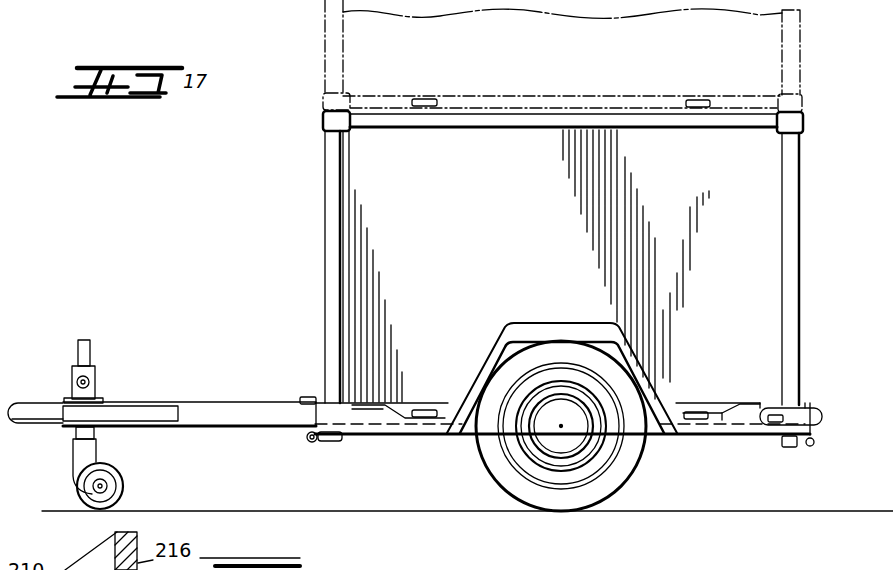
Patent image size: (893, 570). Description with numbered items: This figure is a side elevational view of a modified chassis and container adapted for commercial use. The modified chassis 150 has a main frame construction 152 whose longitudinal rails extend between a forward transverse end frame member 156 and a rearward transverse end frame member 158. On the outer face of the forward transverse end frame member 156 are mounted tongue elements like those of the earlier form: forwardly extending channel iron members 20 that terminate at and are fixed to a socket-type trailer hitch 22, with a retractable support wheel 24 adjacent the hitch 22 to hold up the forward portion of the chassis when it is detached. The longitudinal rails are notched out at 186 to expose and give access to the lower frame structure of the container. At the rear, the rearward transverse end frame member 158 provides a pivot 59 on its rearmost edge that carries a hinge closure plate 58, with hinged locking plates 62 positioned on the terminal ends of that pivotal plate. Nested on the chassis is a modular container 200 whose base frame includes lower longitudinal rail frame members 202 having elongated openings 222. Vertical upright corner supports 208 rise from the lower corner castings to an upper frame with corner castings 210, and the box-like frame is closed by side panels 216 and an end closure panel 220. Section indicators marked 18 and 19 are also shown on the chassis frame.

The channel iron members 20 is at (230, 417).
The trailer hitch 22 is at (28, 402).
The retractable support wheel 24 is at (92, 357).
The hinge closure plate 58 is at (812, 410).
The pivot 59 is at (816, 442).
The hinged locking plates 62 is at (808, 402).
The modified chassis 150 is at (253, 384).
The main frame construction 152 is at (398, 441).
The forward transverse end frame member 156 is at (306, 396).
The rearward transverse end frame member 158 is at (800, 446).
The notch 186 is at (410, 400).
The modular container 200 is at (320, 66).
The lower longitudinal rail frame members 202 is at (737, 414).
The vertical upright corner supports 208 is at (330, 248).
The upper frame corner castings 210 is at (322, 121).
The side panels 216 is at (691, 201).
The end closure panel 220 is at (325, 213).
The elongated openings 222 is at (432, 420).
The rear end frame member 18 is at (585, 305).
The section line for FIG. 19 is at (720, 380).